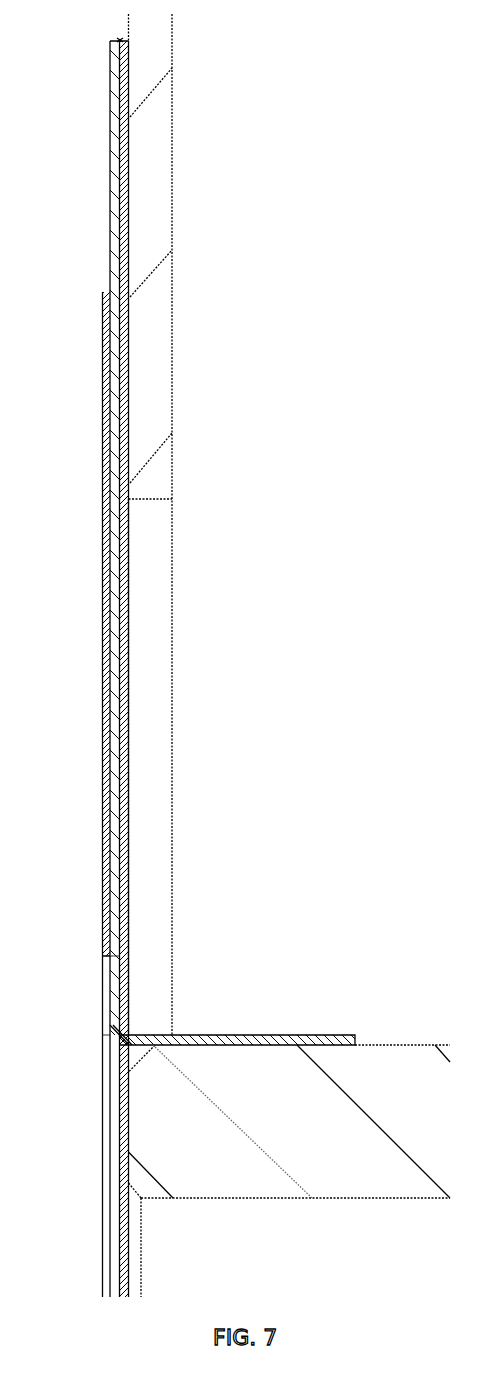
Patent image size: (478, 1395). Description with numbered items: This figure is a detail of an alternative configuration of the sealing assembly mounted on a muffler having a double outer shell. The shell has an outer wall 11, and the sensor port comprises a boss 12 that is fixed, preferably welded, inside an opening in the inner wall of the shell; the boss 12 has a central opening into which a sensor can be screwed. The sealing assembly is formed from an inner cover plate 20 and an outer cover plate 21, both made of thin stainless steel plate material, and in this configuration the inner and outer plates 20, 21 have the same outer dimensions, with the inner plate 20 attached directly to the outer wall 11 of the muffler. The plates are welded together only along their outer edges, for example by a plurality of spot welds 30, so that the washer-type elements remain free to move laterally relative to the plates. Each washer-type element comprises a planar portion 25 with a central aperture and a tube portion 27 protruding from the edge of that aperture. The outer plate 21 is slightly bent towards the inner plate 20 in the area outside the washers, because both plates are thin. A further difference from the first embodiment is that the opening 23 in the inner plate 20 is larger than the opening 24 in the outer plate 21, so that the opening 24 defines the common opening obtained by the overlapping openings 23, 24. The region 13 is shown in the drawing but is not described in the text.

The outer wall 11 is at (148, 42).
The boss 12 is at (360, 1168).
The cavity 13 is at (149, 677).
The inner cover plate 20 is at (128, 385).
The outer cover plate 21 is at (110, 300).
The opening in the inner plate 23 is at (123, 937).
The opening in the outer plate 24 is at (104, 1001).
The planar portion 25 is at (118, 980).
The tube portion 27 is at (343, 1030).
The spot welds 30 is at (121, 40).